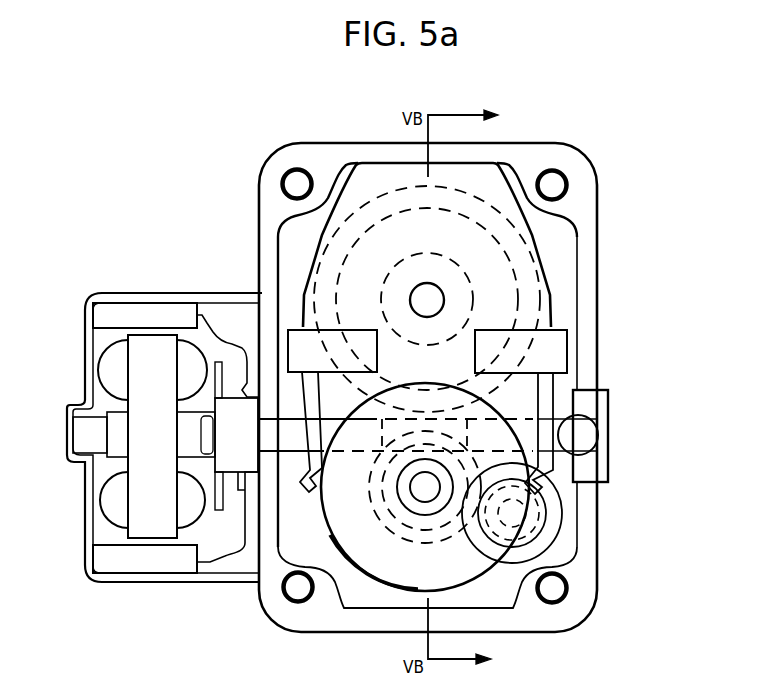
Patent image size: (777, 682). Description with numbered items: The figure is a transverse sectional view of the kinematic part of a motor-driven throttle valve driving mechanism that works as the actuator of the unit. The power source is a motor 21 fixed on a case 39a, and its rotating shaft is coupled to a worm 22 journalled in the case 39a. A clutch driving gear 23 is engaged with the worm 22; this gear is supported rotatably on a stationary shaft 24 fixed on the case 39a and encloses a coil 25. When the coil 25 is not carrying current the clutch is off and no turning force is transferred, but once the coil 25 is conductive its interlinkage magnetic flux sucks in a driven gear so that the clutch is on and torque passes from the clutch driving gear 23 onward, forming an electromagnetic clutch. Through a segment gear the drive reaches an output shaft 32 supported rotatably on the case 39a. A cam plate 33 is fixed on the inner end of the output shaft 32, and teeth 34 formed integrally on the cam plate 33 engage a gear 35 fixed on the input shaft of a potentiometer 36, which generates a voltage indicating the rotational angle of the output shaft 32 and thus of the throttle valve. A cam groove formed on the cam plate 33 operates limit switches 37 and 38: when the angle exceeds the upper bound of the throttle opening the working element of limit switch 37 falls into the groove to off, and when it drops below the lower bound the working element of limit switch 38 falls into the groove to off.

The motor 21 is at (110, 465).
The worm 22 is at (352, 453).
The clutch driving gear 23 is at (538, 273).
The stationary shaft 24 is at (473, 245).
The coil 25 is at (510, 258).
The output shaft 32 is at (430, 492).
The cam plate 33 is at (398, 548).
The teeth 34 is at (386, 512).
The gear 35 is at (548, 508).
The potentiometer 36 is at (565, 524).
The limit switch 37 is at (558, 349).
The limit switch 38 is at (298, 335).
The case 39a is at (580, 163).